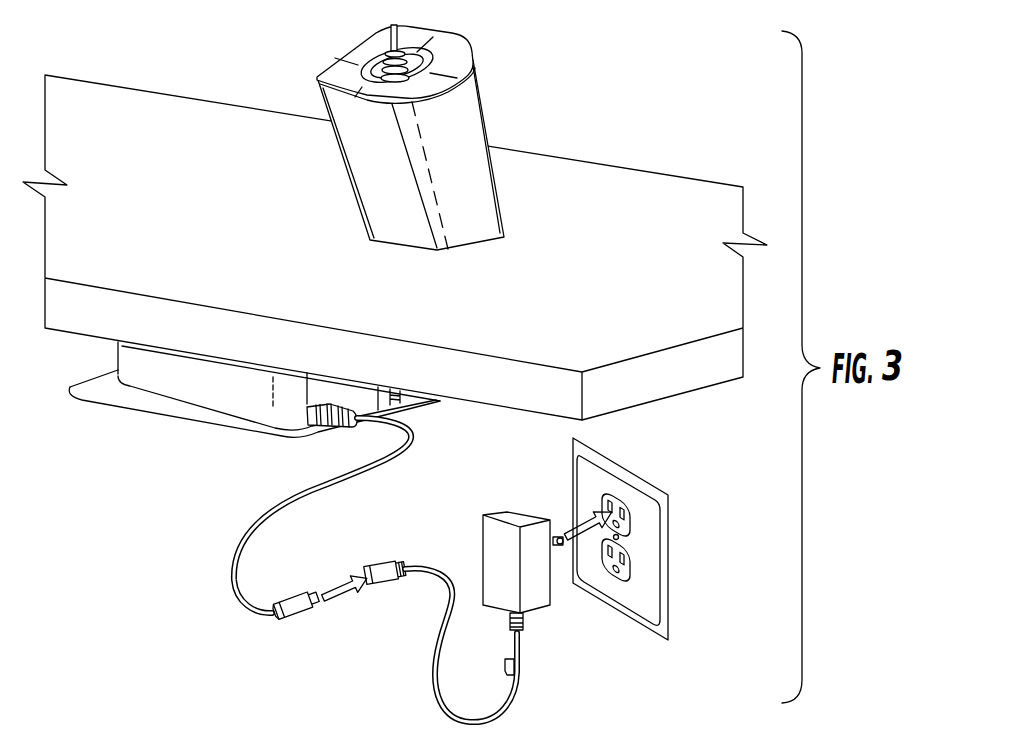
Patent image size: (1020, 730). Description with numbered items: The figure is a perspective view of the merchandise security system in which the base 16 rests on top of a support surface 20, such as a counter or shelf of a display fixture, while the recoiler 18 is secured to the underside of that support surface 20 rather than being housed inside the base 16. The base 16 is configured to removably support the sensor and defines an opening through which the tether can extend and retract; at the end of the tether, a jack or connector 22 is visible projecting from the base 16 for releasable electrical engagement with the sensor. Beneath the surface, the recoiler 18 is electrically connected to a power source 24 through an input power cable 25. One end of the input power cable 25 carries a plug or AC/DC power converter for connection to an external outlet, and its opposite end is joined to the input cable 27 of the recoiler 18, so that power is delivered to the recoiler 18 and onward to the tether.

The base 16 is at (483, 117).
The recoiler 18 is at (163, 390).
The support surface 20 is at (253, 253).
The connector 22 is at (390, 53).
The power source 24 is at (538, 600).
The input power cable 25 is at (433, 660).
The input cable 27 is at (233, 582).